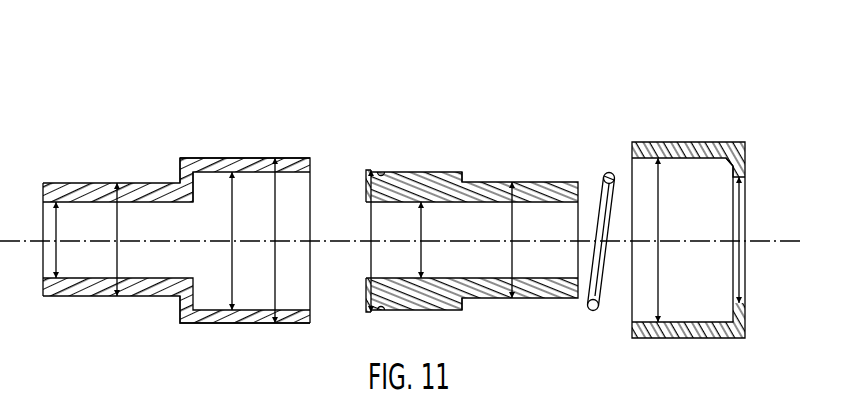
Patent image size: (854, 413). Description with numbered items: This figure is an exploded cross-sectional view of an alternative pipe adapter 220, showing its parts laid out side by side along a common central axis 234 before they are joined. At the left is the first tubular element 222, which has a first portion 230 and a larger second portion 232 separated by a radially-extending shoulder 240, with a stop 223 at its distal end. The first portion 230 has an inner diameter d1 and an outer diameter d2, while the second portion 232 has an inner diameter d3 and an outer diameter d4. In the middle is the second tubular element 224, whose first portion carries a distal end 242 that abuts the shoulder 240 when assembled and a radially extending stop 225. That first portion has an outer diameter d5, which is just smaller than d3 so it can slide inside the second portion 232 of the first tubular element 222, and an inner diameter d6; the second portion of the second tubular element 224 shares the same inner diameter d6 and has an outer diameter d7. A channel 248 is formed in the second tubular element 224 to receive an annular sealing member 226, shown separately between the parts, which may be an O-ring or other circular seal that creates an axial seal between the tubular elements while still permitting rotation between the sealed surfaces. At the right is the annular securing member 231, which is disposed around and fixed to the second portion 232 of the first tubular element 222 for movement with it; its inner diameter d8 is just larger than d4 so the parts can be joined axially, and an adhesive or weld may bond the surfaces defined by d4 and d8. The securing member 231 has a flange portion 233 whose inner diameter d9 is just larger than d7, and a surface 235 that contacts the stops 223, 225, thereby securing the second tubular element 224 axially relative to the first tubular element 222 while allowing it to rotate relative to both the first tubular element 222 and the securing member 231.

The pipe adapter 220 is at (542, 141).
The first tubular element 222 is at (158, 182).
The stop 223 is at (309, 162).
The second tubular element 224 is at (497, 181).
The radially extending stop 225 is at (462, 177).
The annular sealing member 226 is at (610, 173).
The first portion 230 is at (60, 297).
The annular securing member 231 is at (699, 142).
The second portion 232 is at (222, 324).
The flange portion 233 is at (746, 163).
The central axis 234 is at (763, 241).
The surface 235 is at (733, 165).
The radially-extending shoulder 240 is at (194, 193).
The distal end 242 is at (365, 192).
The channel 248 is at (381, 176).
The inner diameter of first portion d1 is at (57, 214).
The outer diameter of first portion d2 is at (118, 214).
The inner diameter of second portion d3 is at (233, 214).
The outer diameter of second portion d4 is at (276, 214).
The outer diameter of second tubular element first portion d5 is at (372, 216).
The inner diameter of second tubular element d6 is at (422, 216).
The outer diameter of second tubular element second portion d7 is at (513, 216).
The inner diameter of annular securing member d8 is at (659, 212).
The inner diameter of flange portion d9 is at (738, 222).